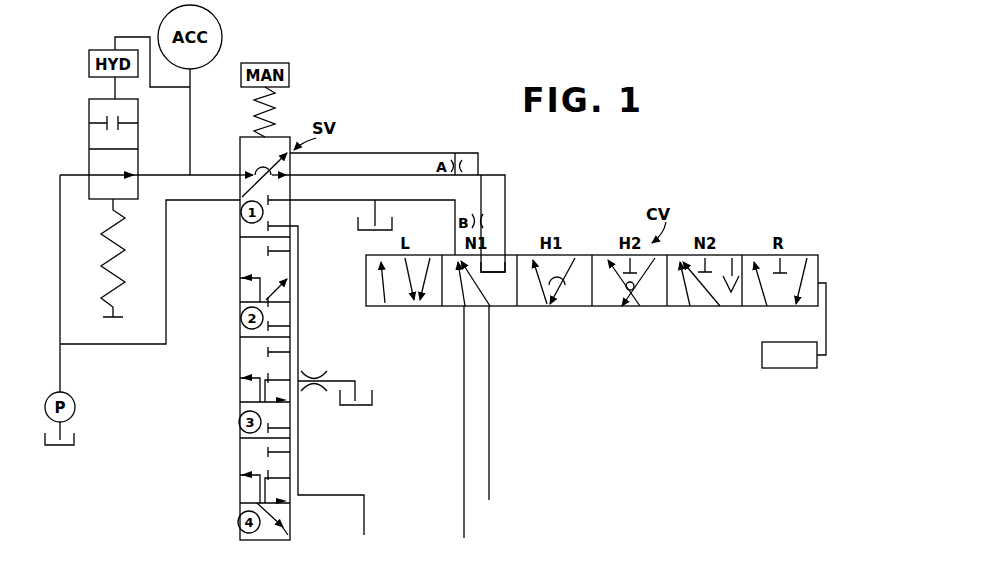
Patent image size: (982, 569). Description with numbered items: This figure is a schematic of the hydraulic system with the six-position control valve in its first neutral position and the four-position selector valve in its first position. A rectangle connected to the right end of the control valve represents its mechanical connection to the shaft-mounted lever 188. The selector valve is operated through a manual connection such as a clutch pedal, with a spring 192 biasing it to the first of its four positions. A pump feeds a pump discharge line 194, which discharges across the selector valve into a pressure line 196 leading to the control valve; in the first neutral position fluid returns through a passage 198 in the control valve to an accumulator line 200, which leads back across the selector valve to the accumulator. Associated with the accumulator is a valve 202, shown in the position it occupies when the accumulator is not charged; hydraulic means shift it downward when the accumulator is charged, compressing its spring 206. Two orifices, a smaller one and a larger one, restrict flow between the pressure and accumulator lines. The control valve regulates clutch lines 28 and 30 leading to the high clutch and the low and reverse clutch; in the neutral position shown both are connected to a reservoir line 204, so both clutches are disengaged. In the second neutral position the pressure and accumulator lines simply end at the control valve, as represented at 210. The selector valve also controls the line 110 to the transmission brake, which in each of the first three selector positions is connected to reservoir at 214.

The accumulator valve 202 is at (89, 101).
The spring 206 is at (116, 258).
The pump discharge line 194 is at (108, 345).
The spring 192 is at (272, 108).
The pressure line 196 is at (384, 152).
The reservoir line 204 is at (360, 199).
The accumulator line 200 is at (505, 185).
The passage 198 is at (506, 261).
The reservoir connection 214 is at (342, 380).
The line to transmission brake 110 is at (364, 517).
The clutch line 28 is at (464, 440).
The clutch line 30 is at (489, 440).
The line termination 210 is at (729, 300).
The shaft-mounted lever 188 is at (794, 325).